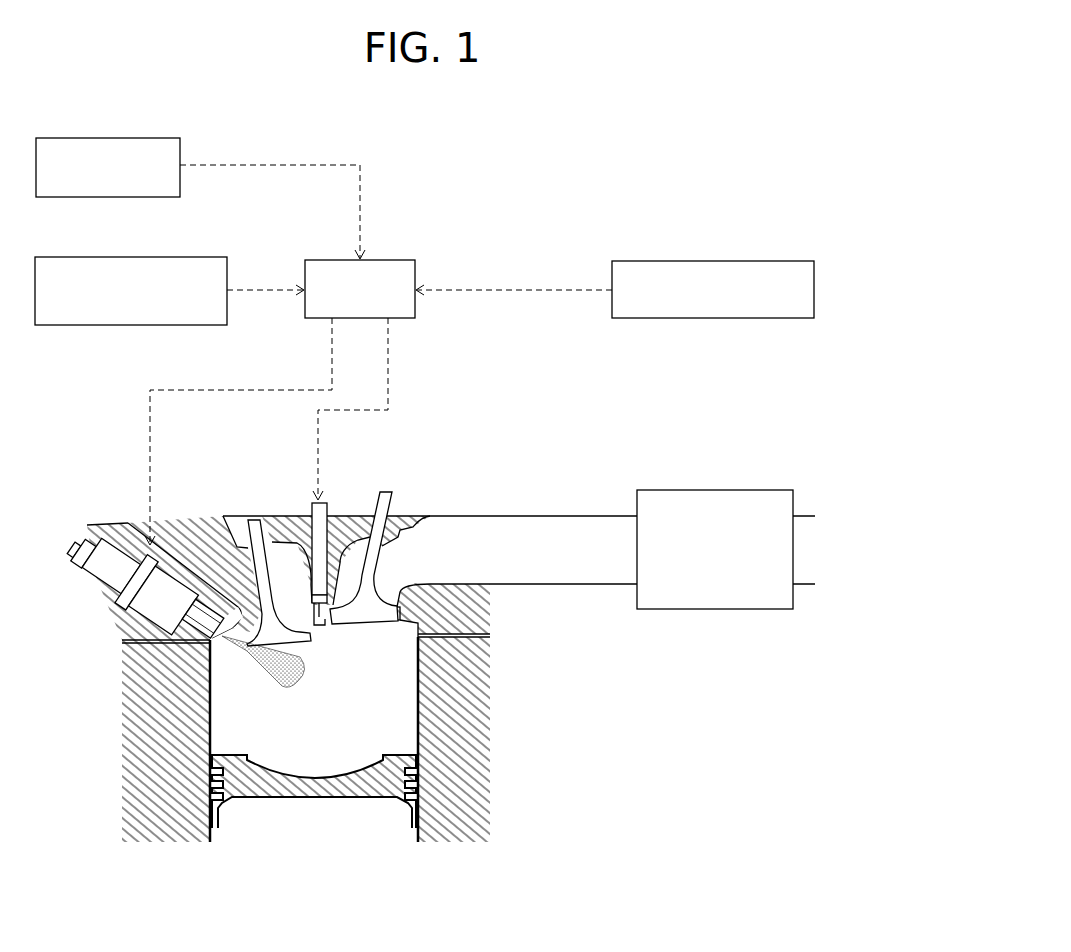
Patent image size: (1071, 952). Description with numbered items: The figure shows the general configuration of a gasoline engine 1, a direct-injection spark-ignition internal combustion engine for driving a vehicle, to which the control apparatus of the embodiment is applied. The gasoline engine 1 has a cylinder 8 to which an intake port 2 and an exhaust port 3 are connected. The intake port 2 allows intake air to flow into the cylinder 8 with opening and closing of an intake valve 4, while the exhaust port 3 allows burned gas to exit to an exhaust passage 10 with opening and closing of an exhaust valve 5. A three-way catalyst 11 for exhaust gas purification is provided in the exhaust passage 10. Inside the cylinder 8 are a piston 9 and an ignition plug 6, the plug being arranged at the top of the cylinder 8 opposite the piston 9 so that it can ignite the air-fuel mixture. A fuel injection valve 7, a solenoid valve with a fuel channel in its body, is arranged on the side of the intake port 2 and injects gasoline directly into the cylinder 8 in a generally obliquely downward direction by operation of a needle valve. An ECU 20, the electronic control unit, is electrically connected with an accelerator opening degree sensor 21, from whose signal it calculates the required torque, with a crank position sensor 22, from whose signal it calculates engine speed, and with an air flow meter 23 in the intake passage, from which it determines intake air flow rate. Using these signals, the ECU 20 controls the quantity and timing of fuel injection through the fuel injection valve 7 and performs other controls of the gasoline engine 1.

The gasoline engine 1 is at (130, 877).
The intake port 2 is at (198, 550).
The exhaust port 3 is at (412, 530).
The intake valve 4 is at (258, 520).
The exhaust valve 5 is at (383, 513).
The ignition plug 6 is at (312, 502).
The fuel injection valve 7 is at (120, 562).
The cylinder 8 is at (210, 680).
The piston 9 is at (293, 792).
The exhaust passage 10 is at (560, 516).
The three-way catalyst 11 is at (712, 490).
The ECU 20 is at (392, 260).
The accelerator opening degree sensor 21 is at (218, 257).
The crank position sensor 22 is at (777, 261).
The air flow meter 23 is at (158, 138).